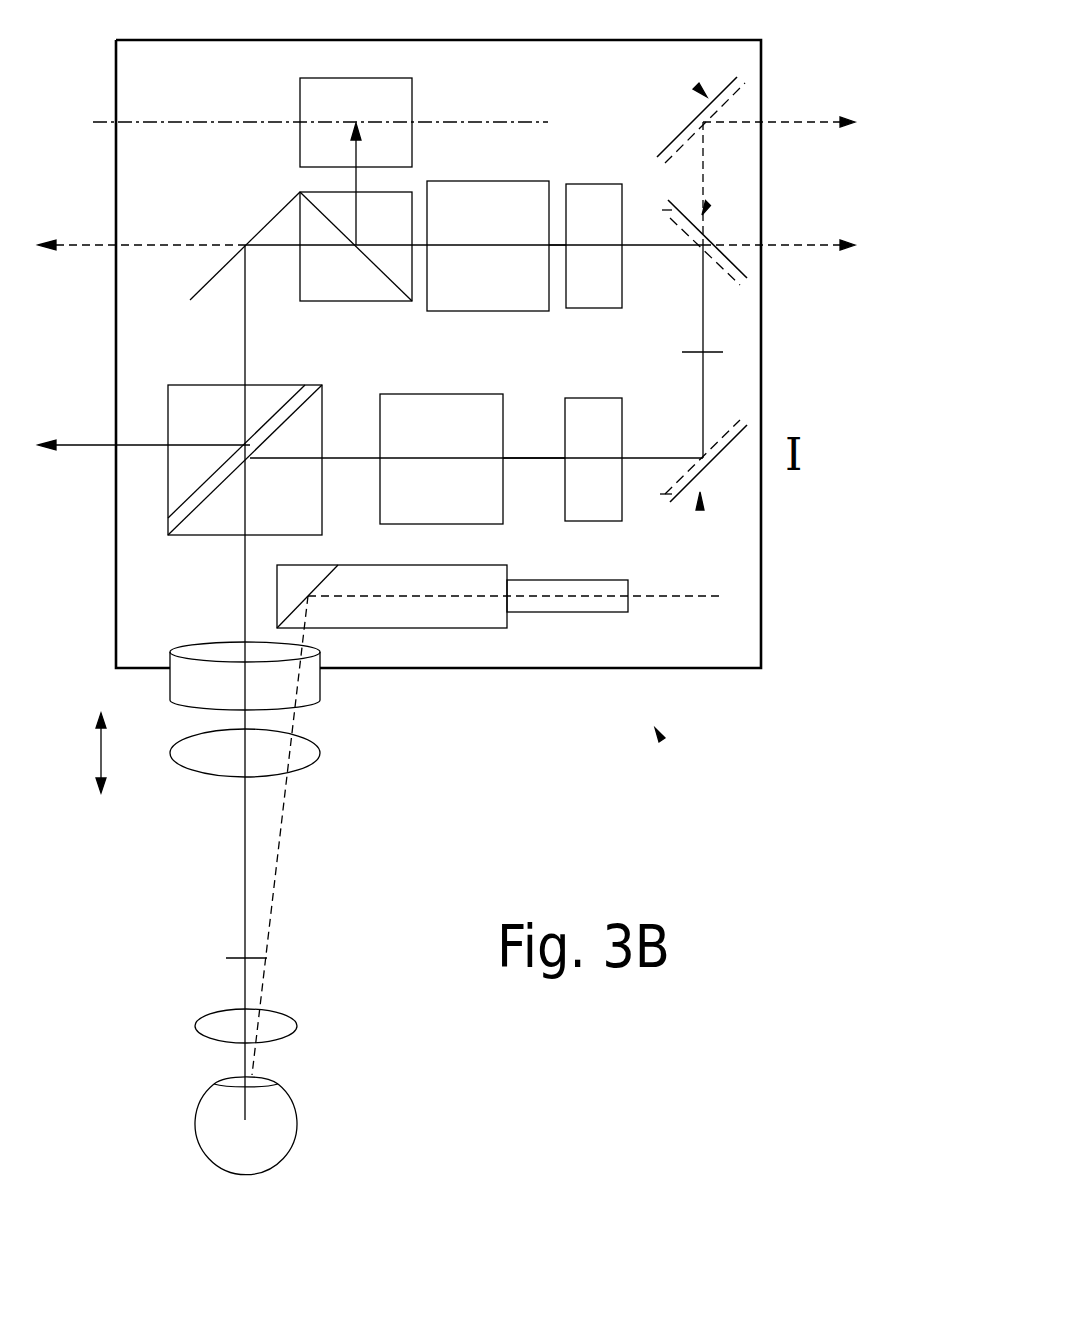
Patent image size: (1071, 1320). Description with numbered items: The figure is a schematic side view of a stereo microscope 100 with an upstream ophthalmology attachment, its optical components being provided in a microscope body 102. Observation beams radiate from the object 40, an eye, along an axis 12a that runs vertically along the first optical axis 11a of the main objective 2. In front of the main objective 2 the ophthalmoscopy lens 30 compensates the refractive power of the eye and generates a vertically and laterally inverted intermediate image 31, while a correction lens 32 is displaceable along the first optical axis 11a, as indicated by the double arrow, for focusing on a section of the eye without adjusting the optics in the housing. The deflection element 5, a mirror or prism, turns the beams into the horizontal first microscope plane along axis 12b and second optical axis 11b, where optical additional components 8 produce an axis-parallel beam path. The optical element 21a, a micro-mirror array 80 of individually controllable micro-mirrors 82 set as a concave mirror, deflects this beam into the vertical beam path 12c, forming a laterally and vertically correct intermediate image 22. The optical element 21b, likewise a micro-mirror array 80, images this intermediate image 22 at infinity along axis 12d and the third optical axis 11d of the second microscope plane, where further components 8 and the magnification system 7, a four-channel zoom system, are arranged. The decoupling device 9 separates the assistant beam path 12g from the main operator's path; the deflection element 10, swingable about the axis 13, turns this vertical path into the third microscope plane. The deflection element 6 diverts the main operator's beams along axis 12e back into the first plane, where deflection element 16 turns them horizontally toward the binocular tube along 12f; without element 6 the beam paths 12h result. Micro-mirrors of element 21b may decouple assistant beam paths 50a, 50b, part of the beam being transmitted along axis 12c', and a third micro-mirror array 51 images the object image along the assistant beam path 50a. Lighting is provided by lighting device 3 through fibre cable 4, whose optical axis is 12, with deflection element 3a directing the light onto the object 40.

The main objective 2 is at (170, 680).
The lighting device 3 is at (460, 628).
The deflection element 3a is at (330, 578).
The fibre cable 4 is at (543, 612).
The deflection element 5 is at (200, 535).
The deflection element 6 is at (202, 290).
The magnification system 7 is at (437, 394).
The optical additional components 8 is at (482, 181).
The decoupling device 9 is at (318, 190).
The deflection element 10 is at (300, 102).
The first optical axis 11a is at (245, 798).
The second optical axis 11b is at (525, 458).
The third optical axis 11d is at (558, 246).
The optical axis of the fibre cable 12 is at (657, 596).
The observation beam axis 12a is at (245, 905).
The observation beam axis 12b is at (340, 458).
The vertical beam path 12c is at (759, 351).
The observation beam axis 12c' is at (759, 183).
The observation beam axis 12d is at (633, 250).
The observation beam axis 12e is at (248, 322).
The observation beam path 12f is at (83, 450).
The observation beam path 12g is at (357, 178).
The observation beam path 12h is at (92, 245).
The axis 13 is at (492, 122).
The deflection element 16 is at (287, 395).
The optical element 21a is at (700, 512).
The optical element 21b is at (706, 208).
The intermediate image 22 is at (682, 352).
The ophthalmoscopy lens 30 is at (200, 1017).
The intermediate image 31 is at (226, 958).
The correction lens 32 is at (177, 748).
The object 40 is at (282, 1108).
The assistant beam path 50a is at (790, 122).
The assistant beam path 50b is at (790, 245).
The third micro-mirror array 51 is at (701, 90).
The micro-mirror array 80 is at (684, 128).
The micro-mirrors 82 is at (745, 88).
The microscope 100 is at (661, 736).
The microscope body 102 is at (761, 358).